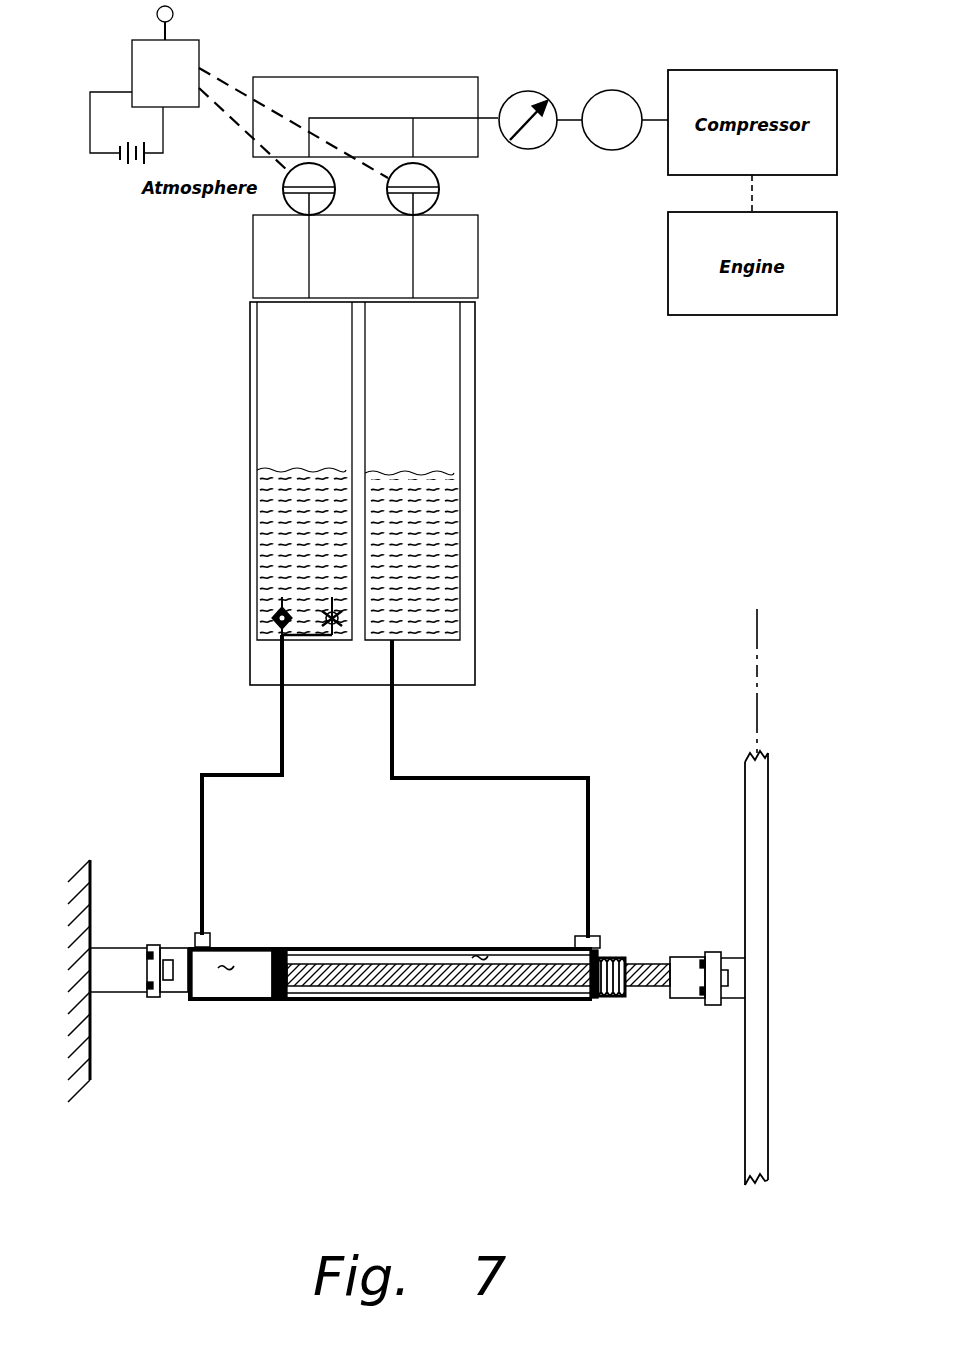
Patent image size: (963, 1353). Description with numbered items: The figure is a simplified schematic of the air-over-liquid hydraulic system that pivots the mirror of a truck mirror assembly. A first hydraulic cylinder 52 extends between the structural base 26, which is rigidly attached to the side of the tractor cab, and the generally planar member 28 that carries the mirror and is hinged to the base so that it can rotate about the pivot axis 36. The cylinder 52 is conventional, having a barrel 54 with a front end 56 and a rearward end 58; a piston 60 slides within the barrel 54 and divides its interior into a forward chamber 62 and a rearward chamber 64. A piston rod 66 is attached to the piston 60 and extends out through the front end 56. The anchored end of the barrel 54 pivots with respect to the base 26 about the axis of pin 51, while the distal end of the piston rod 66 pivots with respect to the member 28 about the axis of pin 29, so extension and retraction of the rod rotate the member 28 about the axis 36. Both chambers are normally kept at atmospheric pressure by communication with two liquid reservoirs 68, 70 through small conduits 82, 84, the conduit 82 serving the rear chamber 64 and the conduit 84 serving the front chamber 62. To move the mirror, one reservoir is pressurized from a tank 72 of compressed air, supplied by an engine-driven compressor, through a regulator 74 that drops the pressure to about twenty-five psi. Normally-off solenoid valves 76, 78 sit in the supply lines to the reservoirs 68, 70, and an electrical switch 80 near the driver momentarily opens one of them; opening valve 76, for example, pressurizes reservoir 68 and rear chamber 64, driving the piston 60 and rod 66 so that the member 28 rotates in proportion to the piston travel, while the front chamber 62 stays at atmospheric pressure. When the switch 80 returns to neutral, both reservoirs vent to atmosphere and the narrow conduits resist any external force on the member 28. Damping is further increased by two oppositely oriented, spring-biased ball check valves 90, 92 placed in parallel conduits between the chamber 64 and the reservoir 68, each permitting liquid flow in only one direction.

The structural base 26 is at (56, 1001).
The generally planar member 28 is at (824, 868).
The pin 29 is at (718, 950).
The pivot axis 36 is at (759, 648).
The pin 51 is at (160, 945).
The first hydraulic cylinder 52 is at (412, 968).
The barrel 54 is at (405, 1005).
The front end 56 is at (548, 1005).
The rearward end 58 is at (205, 1000).
The piston 60 is at (265, 983).
The forward chamber 62 is at (478, 955).
The rearward chamber 64 is at (225, 963).
The piston rod 66 is at (643, 957).
The reservoir 68 is at (253, 383).
The reservoir 70 is at (468, 368).
The tank of compressed air 72 is at (617, 90).
The regulator 74 is at (552, 135).
The solenoid valve 76 is at (335, 200).
The solenoid valve 78 is at (438, 200).
The electrical switch 80 is at (144, 65).
The conduit 82 is at (220, 775).
The conduit 84 is at (510, 778).
The check valve 90 is at (338, 632).
The check valve 92 is at (273, 615).